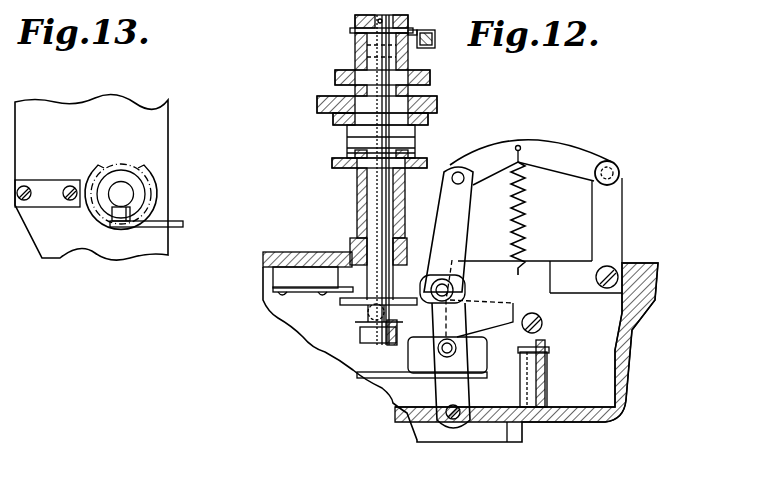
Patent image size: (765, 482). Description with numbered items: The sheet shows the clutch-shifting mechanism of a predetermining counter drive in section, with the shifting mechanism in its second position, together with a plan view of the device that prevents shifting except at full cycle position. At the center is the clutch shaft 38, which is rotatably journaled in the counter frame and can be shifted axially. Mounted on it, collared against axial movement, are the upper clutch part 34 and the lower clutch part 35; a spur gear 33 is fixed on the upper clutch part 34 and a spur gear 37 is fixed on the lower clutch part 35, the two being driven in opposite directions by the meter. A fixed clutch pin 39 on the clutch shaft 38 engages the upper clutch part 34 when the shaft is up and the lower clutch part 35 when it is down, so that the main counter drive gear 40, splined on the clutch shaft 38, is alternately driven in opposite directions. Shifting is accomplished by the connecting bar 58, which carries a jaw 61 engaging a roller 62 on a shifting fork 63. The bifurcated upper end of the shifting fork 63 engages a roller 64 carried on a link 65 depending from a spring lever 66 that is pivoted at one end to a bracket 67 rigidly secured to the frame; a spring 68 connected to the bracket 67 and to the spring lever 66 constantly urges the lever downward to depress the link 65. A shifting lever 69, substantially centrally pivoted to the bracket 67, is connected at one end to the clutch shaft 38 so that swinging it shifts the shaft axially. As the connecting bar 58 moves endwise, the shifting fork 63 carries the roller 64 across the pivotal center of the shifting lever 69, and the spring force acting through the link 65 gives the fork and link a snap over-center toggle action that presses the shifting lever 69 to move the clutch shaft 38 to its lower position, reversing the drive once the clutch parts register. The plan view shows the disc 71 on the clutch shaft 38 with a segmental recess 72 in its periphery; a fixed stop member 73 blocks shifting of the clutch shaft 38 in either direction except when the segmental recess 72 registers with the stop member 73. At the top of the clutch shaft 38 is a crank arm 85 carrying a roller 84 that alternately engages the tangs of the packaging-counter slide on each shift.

In FIG. 12, the spur gear 33 is at (335, 118).
In FIG. 12, the upper clutch part 34 is at (350, 132).
In FIG. 12, the lower clutch part 35 is at (415, 140).
In FIG. 12, the spur gear 37 is at (335, 163).
In FIG. 13, the clutch shaft 38 is at (125, 193).
In FIG. 12, the clutch shaft 38 is at (368, 210).
In FIG. 12, the clutch pin 39 is at (410, 152).
In FIG. 12, the main counter drive gear 40 is at (432, 78).
In FIG. 12, the connecting bar 58 is at (365, 385).
In FIG. 12, the jaw 61 is at (482, 365).
In FIG. 12, the roller 62 is at (438, 350).
In FIG. 12, the shifting fork 63 is at (455, 288).
In FIG. 12, the roller 64 is at (462, 253).
In FIG. 12, the link 65 is at (462, 212).
In FIG. 12, the spring lever 66 is at (555, 148).
In FIG. 12, the bracket 67 is at (612, 212).
In FIG. 12, the spring 68 is at (525, 213).
In FIG. 13, the shifting lever 69 is at (180, 222).
In FIG. 12, the shifting lever 69 is at (380, 332).
In FIG. 13, the disc 71 is at (150, 176).
In FIG. 12, the disc 71 is at (352, 318).
In FIG. 13, the segmental recess 72 is at (126, 170).
In FIG. 13, the stop member 73 is at (47, 200).
In FIG. 12, the stop member 73 is at (330, 300).
In FIG. 13, the roller 84 is at (129, 238).
In FIG. 12, the roller 84 is at (435, 42).
In FIG. 12, the crank arm 85 is at (418, 33).